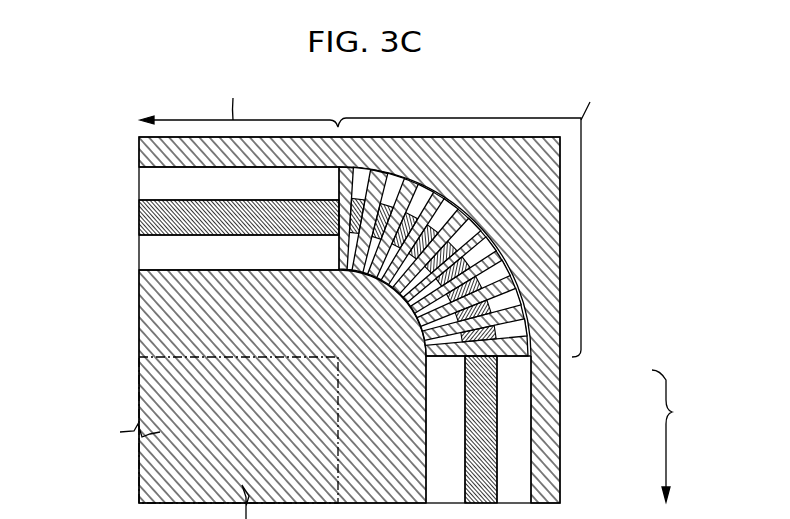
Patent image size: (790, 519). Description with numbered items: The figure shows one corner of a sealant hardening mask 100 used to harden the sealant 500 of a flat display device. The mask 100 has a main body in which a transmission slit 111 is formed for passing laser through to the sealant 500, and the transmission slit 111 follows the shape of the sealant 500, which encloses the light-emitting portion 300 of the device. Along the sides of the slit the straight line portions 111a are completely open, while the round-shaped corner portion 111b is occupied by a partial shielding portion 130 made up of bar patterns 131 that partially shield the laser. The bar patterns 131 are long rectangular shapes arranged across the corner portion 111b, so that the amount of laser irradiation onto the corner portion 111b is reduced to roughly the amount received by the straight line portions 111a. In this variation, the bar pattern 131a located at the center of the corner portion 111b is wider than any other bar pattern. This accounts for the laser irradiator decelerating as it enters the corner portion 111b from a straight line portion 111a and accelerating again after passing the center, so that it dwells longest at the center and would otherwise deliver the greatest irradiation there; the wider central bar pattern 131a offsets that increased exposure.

The sealant hardening mask 100 is at (116, 168).
The transmission slit 111 is at (512, 462).
The straight line portions 111a is at (430, 288).
The corner portions 111b is at (487, 220).
The partial shielding portion 130 is at (511, 365).
The bar patterns 131 is at (503, 261).
The bar pattern in the center of the corner portion 131a is at (463, 229).
The light-emitting portion 300 is at (255, 438).
The sealant 500 is at (497, 421).